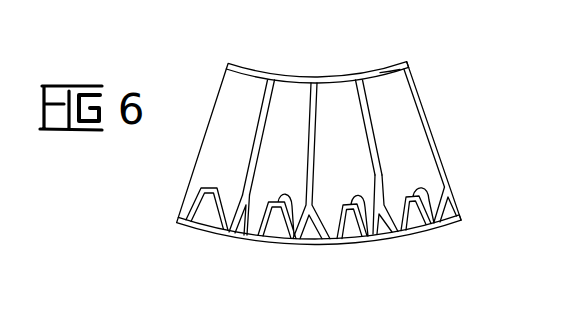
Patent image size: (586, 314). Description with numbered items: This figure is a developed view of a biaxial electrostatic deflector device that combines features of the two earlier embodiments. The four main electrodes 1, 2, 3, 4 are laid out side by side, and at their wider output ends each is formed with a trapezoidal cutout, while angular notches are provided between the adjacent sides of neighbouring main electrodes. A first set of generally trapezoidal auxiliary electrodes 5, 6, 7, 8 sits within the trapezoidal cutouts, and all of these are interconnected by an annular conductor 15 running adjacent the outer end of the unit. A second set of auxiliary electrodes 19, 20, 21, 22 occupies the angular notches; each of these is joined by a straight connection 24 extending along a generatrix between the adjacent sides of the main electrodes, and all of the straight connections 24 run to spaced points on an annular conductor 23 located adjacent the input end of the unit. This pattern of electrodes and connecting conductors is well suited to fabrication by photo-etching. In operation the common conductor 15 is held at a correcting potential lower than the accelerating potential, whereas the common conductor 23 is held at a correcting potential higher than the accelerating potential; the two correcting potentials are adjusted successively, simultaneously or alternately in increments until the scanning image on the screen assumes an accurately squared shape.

The main electrode 1 is at (241, 67).
The main electrode 2 is at (293, 84).
The main electrode 3 is at (341, 86).
The main electrode 4 is at (389, 70).
The auxiliary electrode 5 is at (204, 187).
The auxiliary electrode 6 is at (284, 243).
The auxiliary electrode 7 is at (350, 247).
The auxiliary electrode 8 is at (432, 236).
The annular conductor 15 is at (188, 224).
The auxiliary electrode 19 is at (234, 240).
The auxiliary electrode 20 is at (313, 245).
The auxiliary electrode 21 is at (388, 240).
The auxiliary electrode 22 is at (452, 222).
The annular conductor 23 is at (411, 64).
The straight connection 24 is at (423, 125).